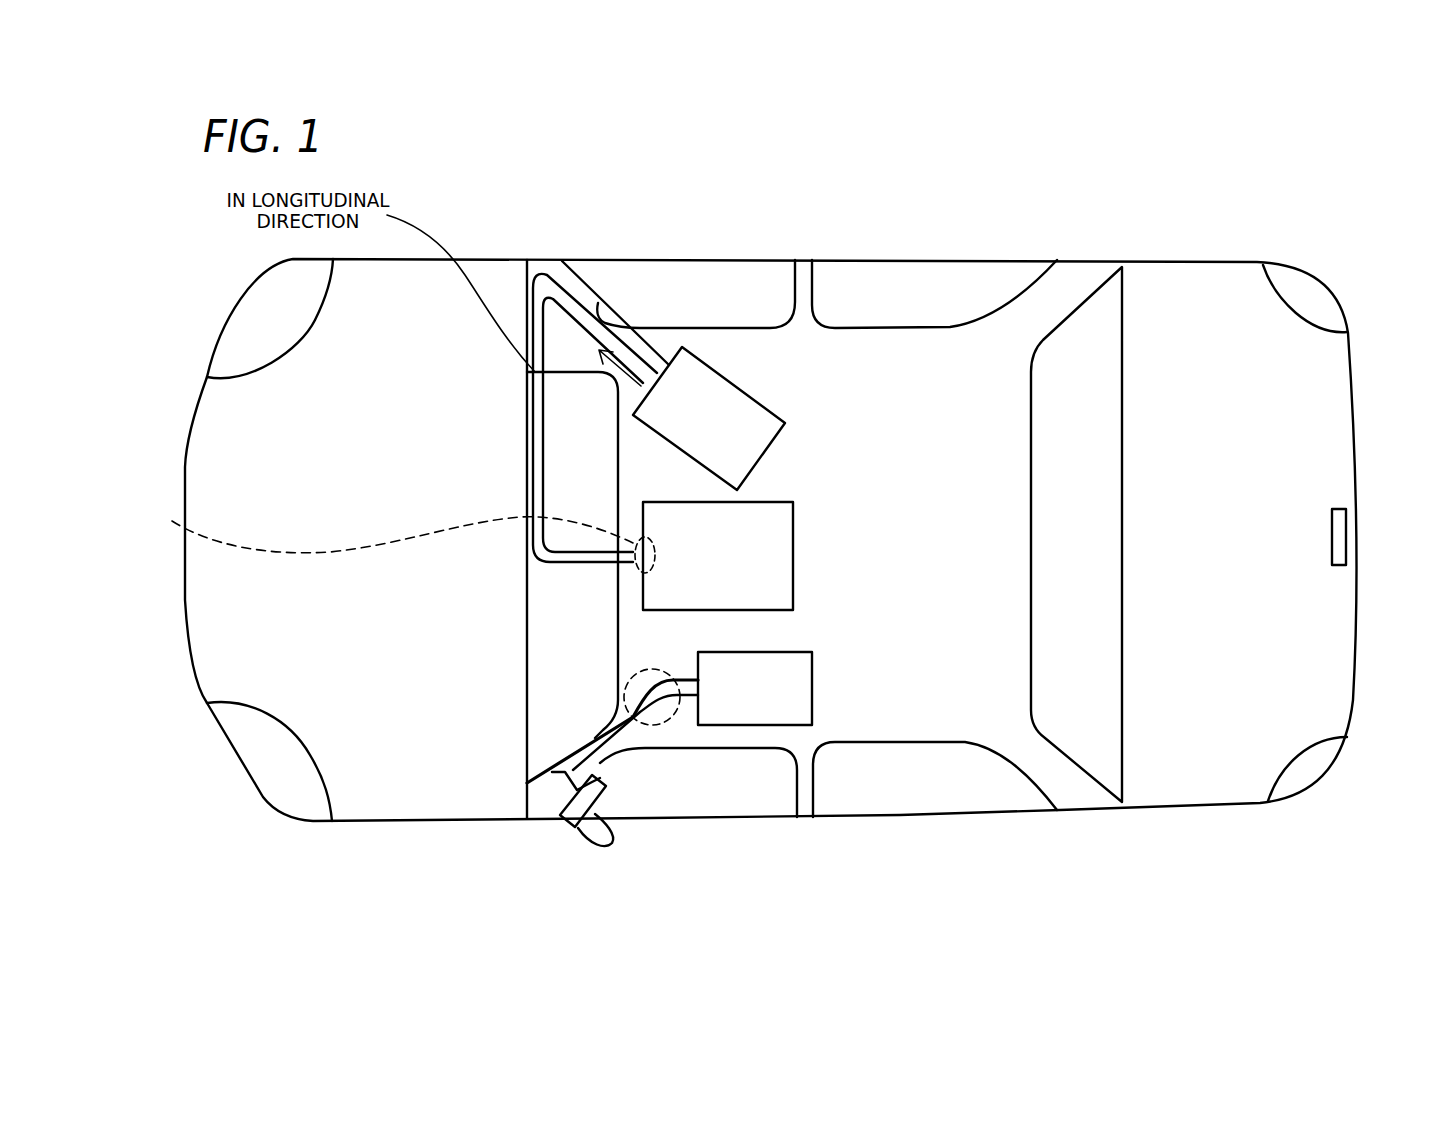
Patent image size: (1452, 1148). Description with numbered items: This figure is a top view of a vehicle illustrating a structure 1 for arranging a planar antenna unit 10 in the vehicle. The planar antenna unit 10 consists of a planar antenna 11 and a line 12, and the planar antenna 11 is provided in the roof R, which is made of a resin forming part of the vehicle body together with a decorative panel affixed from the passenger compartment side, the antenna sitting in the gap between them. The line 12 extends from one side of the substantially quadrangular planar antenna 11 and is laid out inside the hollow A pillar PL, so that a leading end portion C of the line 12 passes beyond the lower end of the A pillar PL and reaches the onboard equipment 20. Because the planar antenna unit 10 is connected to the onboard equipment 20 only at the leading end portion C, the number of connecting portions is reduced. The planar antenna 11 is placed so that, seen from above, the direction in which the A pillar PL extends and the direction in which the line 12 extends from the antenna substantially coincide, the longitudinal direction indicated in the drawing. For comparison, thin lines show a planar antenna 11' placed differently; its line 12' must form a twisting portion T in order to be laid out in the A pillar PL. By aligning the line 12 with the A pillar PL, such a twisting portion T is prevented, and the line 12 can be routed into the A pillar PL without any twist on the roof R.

The structure for arranging a planar antenna unit in a vehicle 1 is at (849, 228).
The planar antenna unit 10 is at (749, 168).
The planar antenna 11 is at (709, 323).
The line 12 is at (576, 520).
The onboard equipment 20 is at (797, 530).
The planar antenna 11' is at (766, 773).
The line 12' is at (612, 782).
The roof R is at (935, 363).
The A pillar PL is at (563, 282).
The leading end portion C is at (386, 525).
The twisting portion T is at (680, 725).